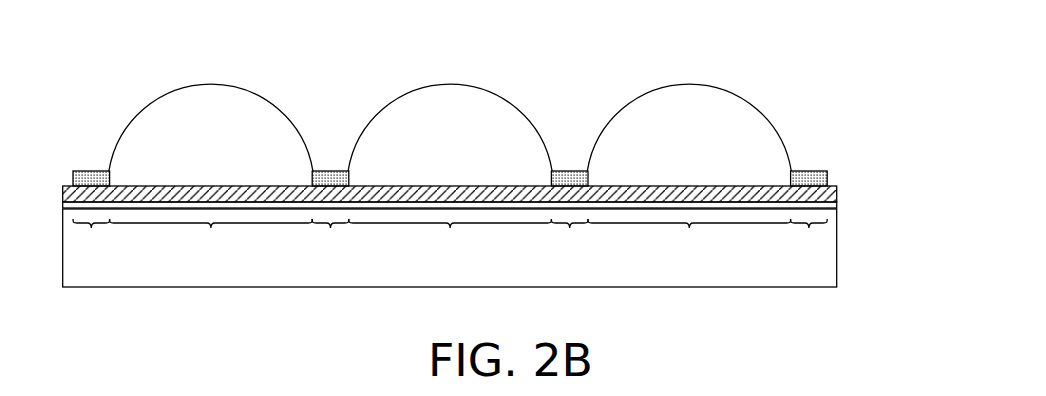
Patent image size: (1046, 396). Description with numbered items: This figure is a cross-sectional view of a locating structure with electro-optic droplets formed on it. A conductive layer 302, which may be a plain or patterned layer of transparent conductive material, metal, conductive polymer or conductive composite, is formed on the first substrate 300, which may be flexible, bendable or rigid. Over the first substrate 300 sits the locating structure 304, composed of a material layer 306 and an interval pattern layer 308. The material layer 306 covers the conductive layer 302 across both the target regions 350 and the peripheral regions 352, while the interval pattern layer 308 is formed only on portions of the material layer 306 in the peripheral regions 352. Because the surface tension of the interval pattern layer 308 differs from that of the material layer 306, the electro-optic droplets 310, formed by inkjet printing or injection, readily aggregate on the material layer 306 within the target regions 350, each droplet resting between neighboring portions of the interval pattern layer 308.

The first substrate 300 is at (826, 268).
The conductive layer 302 is at (832, 205).
The locating structure 304 is at (509, 162).
The material layer 306 is at (836, 195).
The interval pattern layer 308 is at (817, 170).
The electro-optic droplets 310 is at (727, 135).
The target regions 350 is at (450, 241).
The peripheral regions 352 is at (450, 241).